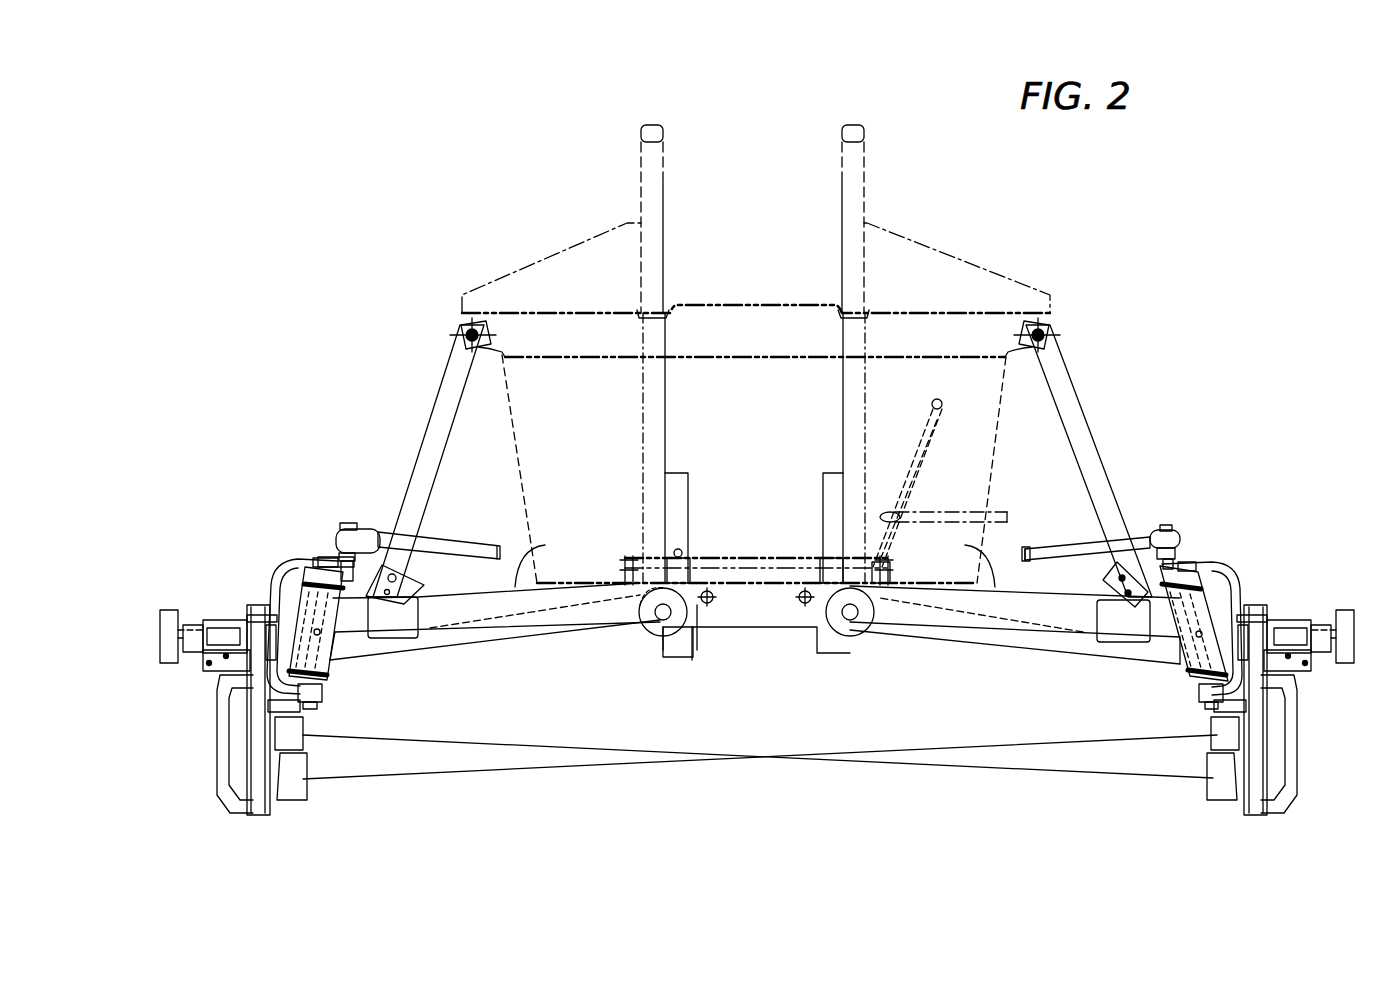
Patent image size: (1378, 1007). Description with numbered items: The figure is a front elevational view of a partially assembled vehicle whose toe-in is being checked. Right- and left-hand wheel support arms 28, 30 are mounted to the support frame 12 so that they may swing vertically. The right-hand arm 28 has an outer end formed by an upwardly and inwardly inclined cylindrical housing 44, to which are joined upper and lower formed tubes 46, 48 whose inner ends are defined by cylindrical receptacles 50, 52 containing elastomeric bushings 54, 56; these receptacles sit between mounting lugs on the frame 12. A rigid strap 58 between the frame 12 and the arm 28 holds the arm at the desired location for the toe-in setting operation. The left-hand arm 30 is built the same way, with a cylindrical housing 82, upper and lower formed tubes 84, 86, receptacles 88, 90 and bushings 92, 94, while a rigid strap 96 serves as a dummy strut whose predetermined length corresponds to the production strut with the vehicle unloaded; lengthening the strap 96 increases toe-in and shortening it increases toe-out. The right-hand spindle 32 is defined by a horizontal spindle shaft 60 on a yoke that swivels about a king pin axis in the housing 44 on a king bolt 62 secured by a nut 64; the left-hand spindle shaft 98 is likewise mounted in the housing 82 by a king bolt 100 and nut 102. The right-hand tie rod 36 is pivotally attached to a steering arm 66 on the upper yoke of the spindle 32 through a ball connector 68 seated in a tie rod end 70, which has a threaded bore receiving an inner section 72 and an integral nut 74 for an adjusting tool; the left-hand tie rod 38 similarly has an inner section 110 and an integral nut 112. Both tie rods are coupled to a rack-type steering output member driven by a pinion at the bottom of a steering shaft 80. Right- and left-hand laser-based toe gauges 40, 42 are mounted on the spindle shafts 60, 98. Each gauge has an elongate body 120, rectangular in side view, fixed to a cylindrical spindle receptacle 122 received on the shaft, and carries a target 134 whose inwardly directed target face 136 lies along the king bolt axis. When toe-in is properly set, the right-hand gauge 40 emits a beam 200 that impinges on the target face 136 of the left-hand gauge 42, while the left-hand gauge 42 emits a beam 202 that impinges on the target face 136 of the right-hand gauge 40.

The support frame 12 is at (773, 305).
The right-hand wheel support arm 28 is at (495, 652).
The left-hand wheel support arm 30 is at (1015, 654).
The right-hand spindle 32 is at (335, 611).
The right-hand tie rod 36 is at (450, 544).
The left-hand tie rod 38 is at (1060, 547).
The right-hand laser-based toe gauge 40 is at (292, 806).
The left-hand laser-based toe gauge 42 is at (1233, 806).
The cylindrical housing 44 is at (337, 683).
The upper formed tube 46 is at (522, 580).
The lower formed tube 48 is at (527, 640).
The cylindrical receptacle 50 is at (707, 622).
The cylindrical receptacle 52 is at (641, 629).
The bushing 54 is at (712, 633).
The bushing 56 is at (662, 658).
The rigid strap 58 is at (446, 372).
The spindle shaft 60 is at (182, 609).
The king bolt 62 is at (325, 556).
The nut 64 is at (320, 703).
The steering arm 66 is at (341, 658).
The ball connector 68 is at (352, 562).
The tie rod end 70 is at (344, 522).
The inner section 72 is at (497, 545).
The integral nut 74 is at (418, 569).
The steering shaft 80 is at (944, 399).
The cylindrical housing 82 is at (1095, 625).
The upper formed tube 84 is at (1020, 585).
The lower formed tube 86 is at (1006, 650).
The cylindrical receptacle 88 is at (785, 566).
The cylindrical receptacle 90 is at (1188, 645).
The bushing 92 is at (800, 613).
The bushing 94 is at (845, 640).
The rigid strap 96 is at (1073, 420).
The spindle shaft 98 is at (1325, 660).
The king bolt 100 is at (1192, 540).
The nut 102 is at (1198, 702).
The inner section 110 is at (1030, 547).
The integral nut 112 is at (1100, 577).
The elongate body 120 is at (252, 812).
The cylindrical spindle receptacle 122 is at (213, 673).
The target 134 is at (1245, 587).
The target face 136 is at (1213, 745).
The beam 200 is at (460, 781).
The beam 202 is at (1025, 771).